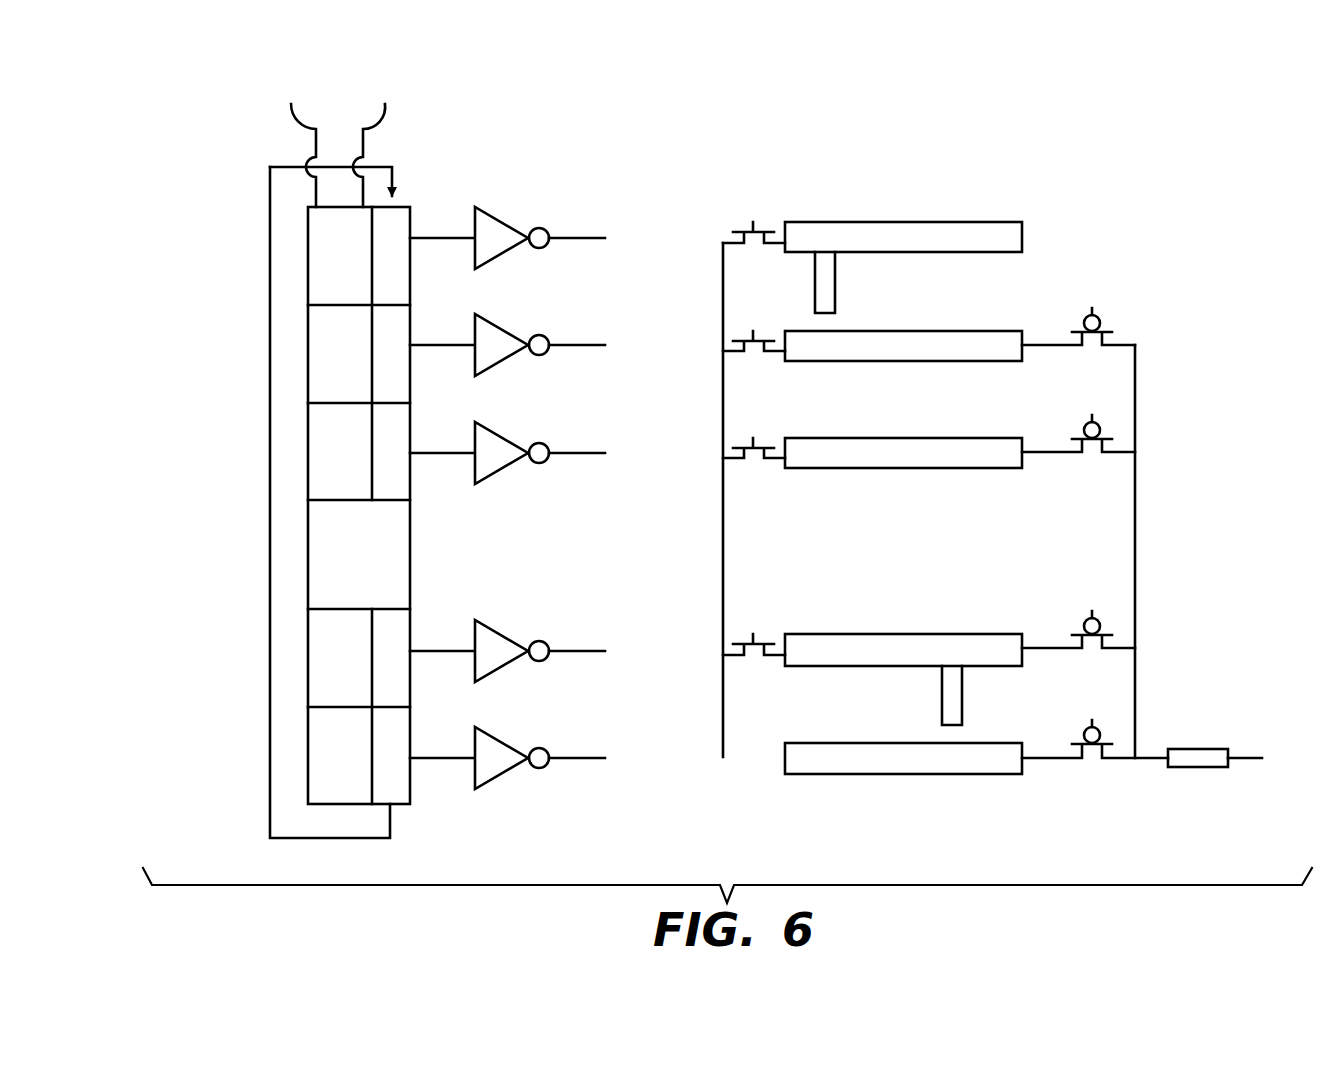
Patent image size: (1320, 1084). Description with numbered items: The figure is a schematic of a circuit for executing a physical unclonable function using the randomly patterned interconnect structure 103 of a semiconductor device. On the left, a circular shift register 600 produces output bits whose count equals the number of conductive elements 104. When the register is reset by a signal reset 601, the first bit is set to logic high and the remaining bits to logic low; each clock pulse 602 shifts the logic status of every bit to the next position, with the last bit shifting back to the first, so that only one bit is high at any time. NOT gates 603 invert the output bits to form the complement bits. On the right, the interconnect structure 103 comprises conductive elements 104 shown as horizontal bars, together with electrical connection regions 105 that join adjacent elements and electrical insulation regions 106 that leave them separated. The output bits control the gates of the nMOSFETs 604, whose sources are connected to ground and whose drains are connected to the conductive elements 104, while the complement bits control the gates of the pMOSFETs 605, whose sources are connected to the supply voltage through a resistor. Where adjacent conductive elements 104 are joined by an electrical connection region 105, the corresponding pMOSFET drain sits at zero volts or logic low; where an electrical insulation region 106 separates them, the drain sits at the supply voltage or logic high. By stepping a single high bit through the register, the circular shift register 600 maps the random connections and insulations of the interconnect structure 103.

The circular shift register 600 is at (180, 118).
The signal reset 601 is at (292, 139).
The clock pulse 602 is at (382, 139).
The NOT gates 603 is at (507, 212).
The n-channel metal-oxide-semiconductor field-effect transistors 604 is at (732, 217).
The p-channel metal-oxide-semiconductor field-effect transistors 605 is at (1116, 316).
The randomly patterned interconnect structure 103 is at (900, 134).
The conductive elements 104 is at (999, 221).
The electrical connection regions 105 is at (843, 280).
The electrical insulation regions 106 is at (999, 439).